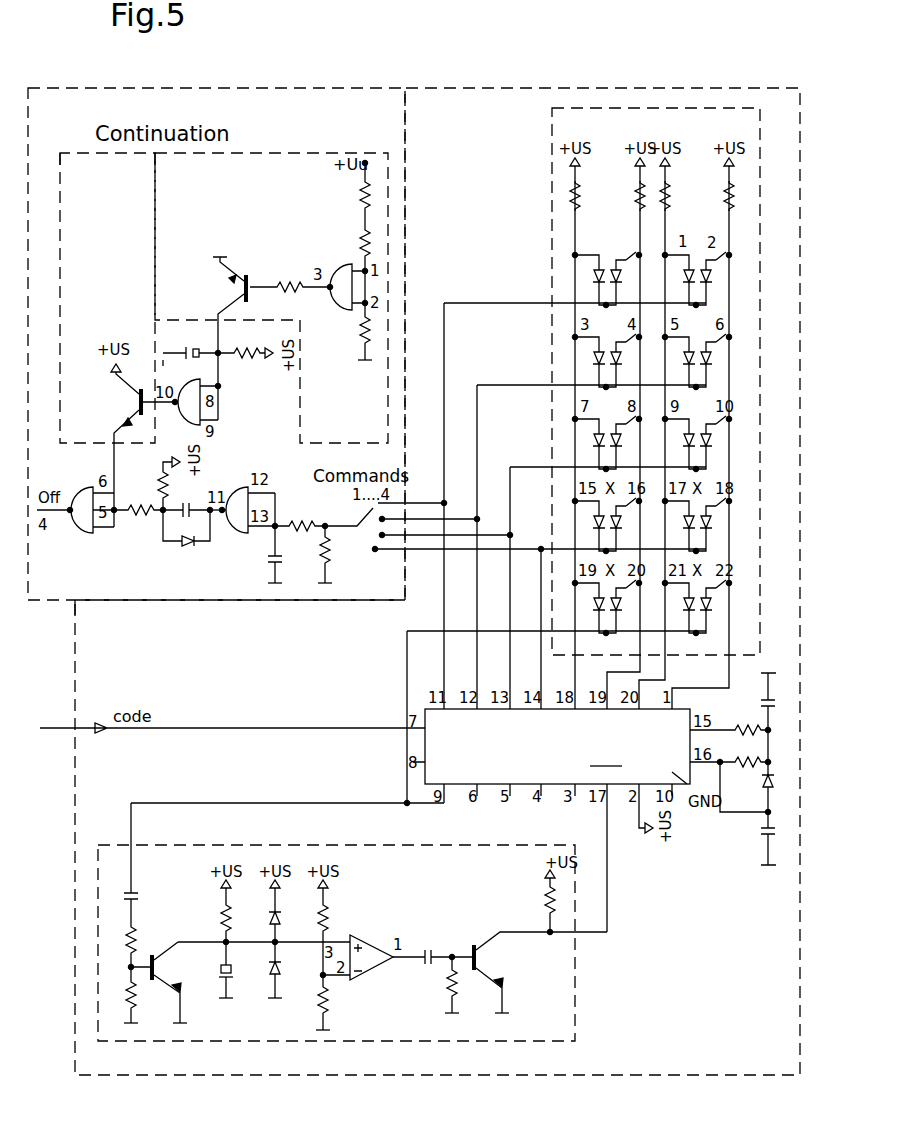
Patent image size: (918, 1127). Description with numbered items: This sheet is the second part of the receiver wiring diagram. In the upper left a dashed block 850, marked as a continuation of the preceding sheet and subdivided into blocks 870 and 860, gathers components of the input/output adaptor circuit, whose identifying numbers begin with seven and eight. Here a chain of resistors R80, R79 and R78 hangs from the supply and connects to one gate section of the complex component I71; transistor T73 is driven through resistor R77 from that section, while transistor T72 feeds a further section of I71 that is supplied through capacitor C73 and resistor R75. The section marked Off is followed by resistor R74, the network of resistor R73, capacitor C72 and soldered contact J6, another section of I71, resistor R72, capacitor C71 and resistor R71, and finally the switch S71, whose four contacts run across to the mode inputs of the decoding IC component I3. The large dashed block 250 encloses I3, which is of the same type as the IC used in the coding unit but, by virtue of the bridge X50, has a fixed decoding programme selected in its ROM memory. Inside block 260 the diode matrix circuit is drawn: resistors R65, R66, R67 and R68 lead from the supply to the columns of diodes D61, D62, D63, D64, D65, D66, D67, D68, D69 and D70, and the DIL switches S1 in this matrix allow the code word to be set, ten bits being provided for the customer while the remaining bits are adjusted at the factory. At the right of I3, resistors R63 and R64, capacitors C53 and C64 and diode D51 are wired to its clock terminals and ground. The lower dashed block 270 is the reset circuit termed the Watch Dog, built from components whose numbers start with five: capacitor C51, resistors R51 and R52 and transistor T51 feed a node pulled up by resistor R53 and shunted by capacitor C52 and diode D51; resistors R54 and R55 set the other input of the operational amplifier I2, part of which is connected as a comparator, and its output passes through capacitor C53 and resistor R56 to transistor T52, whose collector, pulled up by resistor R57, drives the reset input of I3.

The continuation circuit block 850 is at (216, 344).
The sub-block 860 is at (271, 298).
The sub-block 870 is at (107, 298).
The control circuit block 250 is at (437, 581).
The diode matrix / switch block 260 is at (656, 381).
The reset circuit 270 is at (336, 943).
The resistor R80 is at (375, 195).
The resistor R79 is at (375, 243).
The resistor R78 is at (375, 331).
The resistor R77 is at (288, 297).
The resistor R75 is at (245, 365).
The resistor R74 is at (138, 521).
The resistor R73 is at (171, 483).
The resistor R72 is at (300, 536).
The resistor R71 is at (332, 554).
The resistor R65 is at (586, 195).
The resistor R66 is at (633, 195).
The resistor R67 is at (674, 195).
The resistor R68 is at (740, 195).
The resistor R63 is at (748, 740).
The resistor R64 is at (748, 771).
The resistor R51 is at (123, 940).
The resistor R52 is at (123, 993).
The resistor R53 is at (237, 918).
The resistor R54 is at (333, 918).
The resistor R55 is at (333, 999).
The resistor R56 is at (463, 986).
The resistor R57 is at (562, 901).
The capacitor C73 is at (190, 365).
The capacitor C72 is at (186, 518).
The capacitor C71 is at (268, 554).
The capacitor C51 is at (140, 893).
The capacitor C52 is at (236, 965).
The capacitor C53 is at (605, 837).
The capacitor C64 is at (777, 843).
The transistor T73 is at (222, 321).
The transistor T72 is at (136, 428).
The transistor T51 is at (173, 982).
The transistor T52 is at (540, 972).
The complex component I71 is at (207, 408).
The operational amplifier I2 is at (371, 957).
The IC component I3 is at (557, 820).
The soldered contact J6 is at (186, 540).
The switch S71 is at (433, 532).
The DIL switches S1 is at (664, 321).
The bridge X50 is at (619, 246).
The diode D51 is at (526, 873).
The diode D61 is at (601, 281).
The diode D62 is at (688, 281).
The diode D63 is at (601, 363).
The diode D64 is at (688, 363).
The diode D65 is at (601, 445).
The diode D66 is at (688, 445).
The diode D67 is at (601, 527).
The diode D68 is at (688, 527).
The diode D69 is at (601, 609).
The diode D70 is at (688, 609).